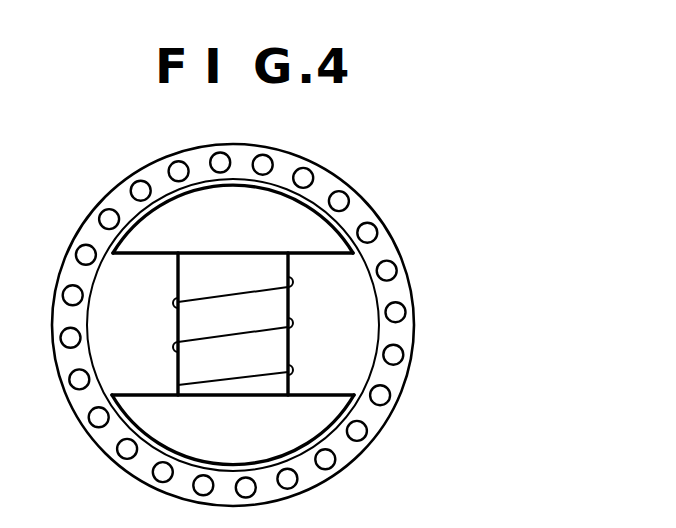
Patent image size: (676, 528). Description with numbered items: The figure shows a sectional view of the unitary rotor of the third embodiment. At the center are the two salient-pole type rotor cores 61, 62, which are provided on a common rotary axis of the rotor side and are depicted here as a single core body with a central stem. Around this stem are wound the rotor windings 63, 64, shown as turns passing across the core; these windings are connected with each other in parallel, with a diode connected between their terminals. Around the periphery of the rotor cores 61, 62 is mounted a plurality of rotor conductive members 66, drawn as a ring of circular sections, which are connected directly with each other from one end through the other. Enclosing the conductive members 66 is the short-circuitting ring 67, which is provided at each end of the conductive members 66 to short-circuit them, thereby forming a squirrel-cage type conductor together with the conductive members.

The salient-pole type rotor core 61 is at (295, 325).
The salient-pole type rotor core 62 is at (360, 410).
The rotor winding 63 is at (233, 324).
The rotor winding 64 is at (233, 338).
The rotor conductive member 66 is at (350, 194).
The short-circuitting ring 67 is at (411, 291).